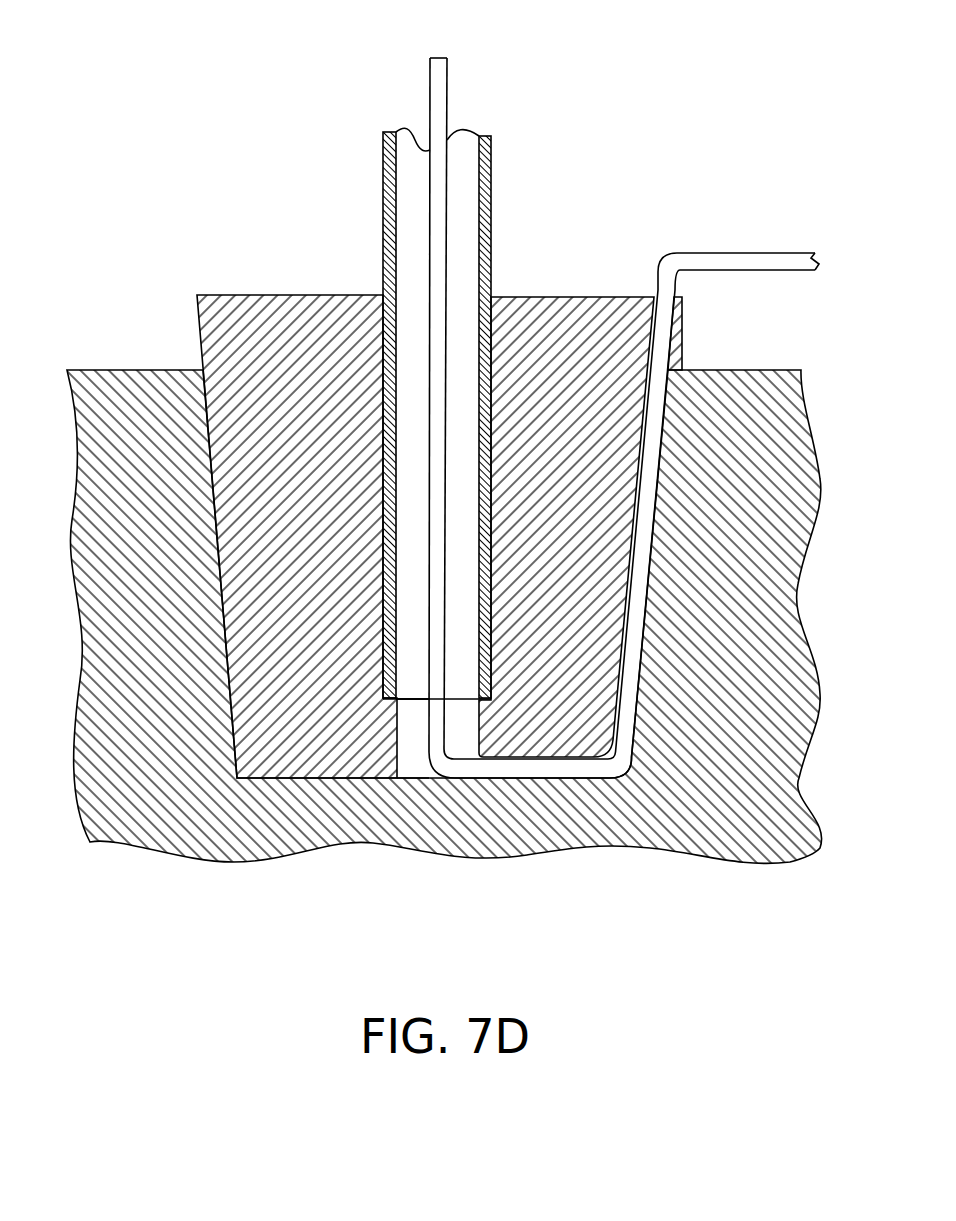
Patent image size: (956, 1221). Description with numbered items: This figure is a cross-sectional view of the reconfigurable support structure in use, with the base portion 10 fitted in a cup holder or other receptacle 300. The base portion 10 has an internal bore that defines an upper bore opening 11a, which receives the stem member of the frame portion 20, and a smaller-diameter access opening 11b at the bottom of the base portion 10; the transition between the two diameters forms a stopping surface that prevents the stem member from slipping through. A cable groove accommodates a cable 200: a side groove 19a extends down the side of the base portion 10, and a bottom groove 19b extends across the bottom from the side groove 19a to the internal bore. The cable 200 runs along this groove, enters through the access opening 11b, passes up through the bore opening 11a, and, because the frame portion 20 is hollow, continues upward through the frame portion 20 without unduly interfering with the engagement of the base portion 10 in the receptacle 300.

The base portion 10 is at (594, 297).
The bore opening 11a is at (413, 303).
The access opening 11b is at (418, 763).
The side groove 19a is at (672, 330).
The bottom groove 19b is at (620, 778).
The frame portion 20 is at (493, 187).
The cable 200 is at (624, 479).
The receptacle 300 is at (123, 370).